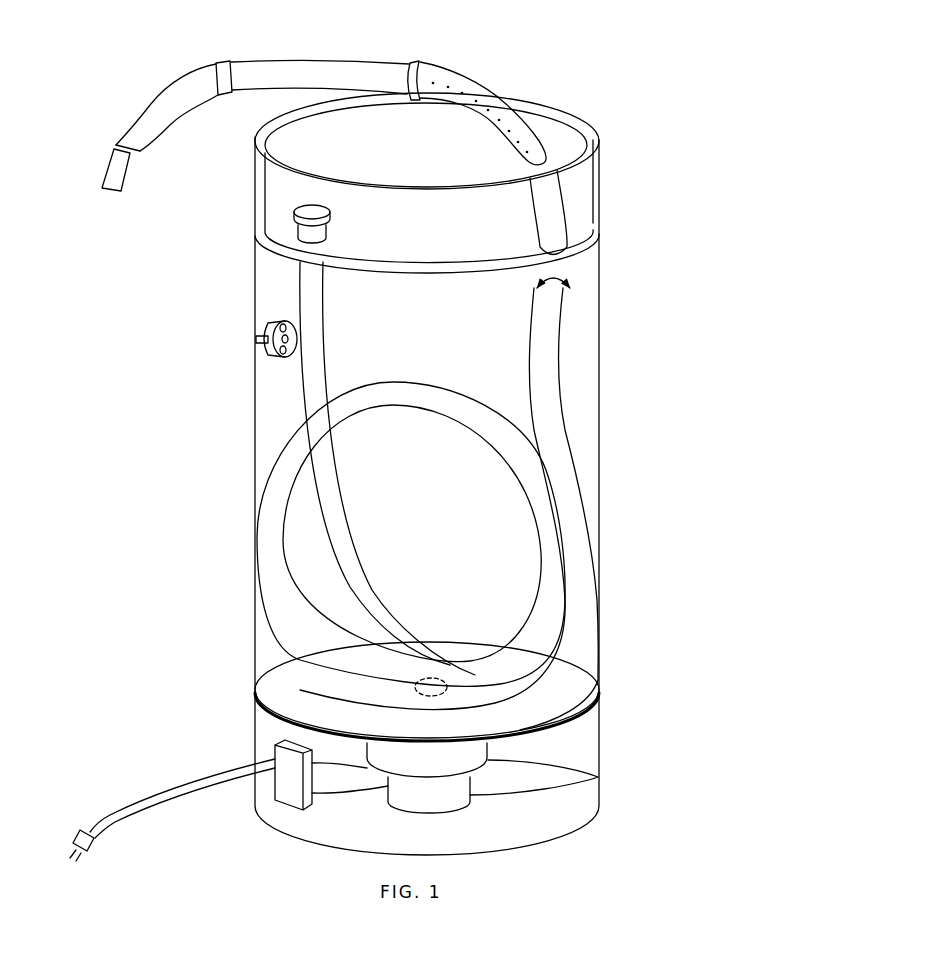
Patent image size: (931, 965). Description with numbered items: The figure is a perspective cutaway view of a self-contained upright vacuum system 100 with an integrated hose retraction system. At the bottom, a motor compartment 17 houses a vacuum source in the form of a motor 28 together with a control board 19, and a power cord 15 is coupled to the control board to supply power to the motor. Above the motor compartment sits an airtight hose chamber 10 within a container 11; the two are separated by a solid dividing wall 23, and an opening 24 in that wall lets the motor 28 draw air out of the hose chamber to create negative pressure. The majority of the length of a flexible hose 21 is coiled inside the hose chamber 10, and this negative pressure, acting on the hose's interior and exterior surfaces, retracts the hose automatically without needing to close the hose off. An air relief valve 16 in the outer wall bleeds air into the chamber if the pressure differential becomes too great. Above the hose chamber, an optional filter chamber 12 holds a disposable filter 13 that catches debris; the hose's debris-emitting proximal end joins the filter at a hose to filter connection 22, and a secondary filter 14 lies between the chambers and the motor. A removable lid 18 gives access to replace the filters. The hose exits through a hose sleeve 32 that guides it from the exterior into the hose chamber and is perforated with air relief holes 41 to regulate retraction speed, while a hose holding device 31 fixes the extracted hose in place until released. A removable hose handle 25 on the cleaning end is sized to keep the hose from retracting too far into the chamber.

The upright vacuum system 100 is at (404, 46).
The hose chamber 10 is at (571, 425).
The container 11 is at (601, 478).
The filter chamber 12 is at (600, 196).
The disposable filter 13 is at (568, 152).
The secondary filter 14 is at (583, 693).
The power cord 15 is at (88, 825).
The air relief valve 16 is at (258, 338).
The motor compartment 17 is at (581, 754).
The lid 18 is at (595, 122).
The control board 19 is at (276, 750).
The flexible hose 21 is at (548, 357).
The hose to filter connection 22 is at (293, 219).
The solid dividing wall 23 is at (256, 707).
The opening 24 is at (405, 687).
The hose handle 25 is at (143, 120).
The motor 28 is at (461, 762).
The hose holding device 31 is at (421, 66).
The hose sleeve 32 is at (486, 96).
The air relief holes 41 is at (499, 116).